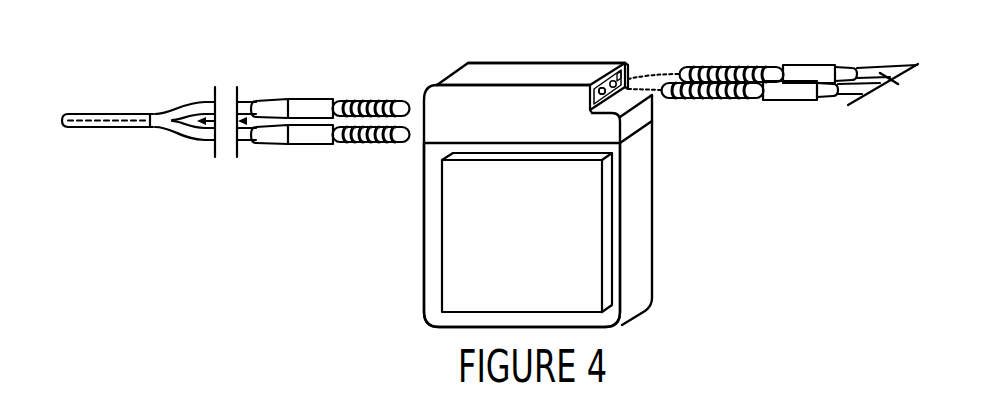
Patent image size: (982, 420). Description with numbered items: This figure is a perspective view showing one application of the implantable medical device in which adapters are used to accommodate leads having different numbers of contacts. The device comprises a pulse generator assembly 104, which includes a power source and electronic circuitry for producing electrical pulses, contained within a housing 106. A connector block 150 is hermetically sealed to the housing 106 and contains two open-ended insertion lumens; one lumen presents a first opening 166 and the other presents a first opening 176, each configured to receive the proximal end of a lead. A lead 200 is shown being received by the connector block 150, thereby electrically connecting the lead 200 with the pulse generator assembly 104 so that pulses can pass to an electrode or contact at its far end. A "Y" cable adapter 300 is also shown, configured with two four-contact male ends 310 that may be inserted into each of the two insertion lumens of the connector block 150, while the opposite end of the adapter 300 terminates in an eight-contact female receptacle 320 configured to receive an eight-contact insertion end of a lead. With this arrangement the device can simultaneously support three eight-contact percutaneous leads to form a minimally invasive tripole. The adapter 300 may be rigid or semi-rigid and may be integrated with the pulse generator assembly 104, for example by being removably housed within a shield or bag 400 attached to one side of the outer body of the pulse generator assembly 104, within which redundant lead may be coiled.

The pulse generator assembly 104 is at (663, 225).
The housing 106 is at (423, 280).
The connector block 150 is at (535, 73).
The first opening 166 is at (592, 90).
The first opening 176 is at (623, 64).
The bag 400 is at (538, 244).
The lead 200 is at (783, 88).
The "Y" cable adapter 300 is at (312, 84).
The 4-contact male ends 310 is at (381, 99).
The 8-contact female receptacle 320 is at (103, 130).